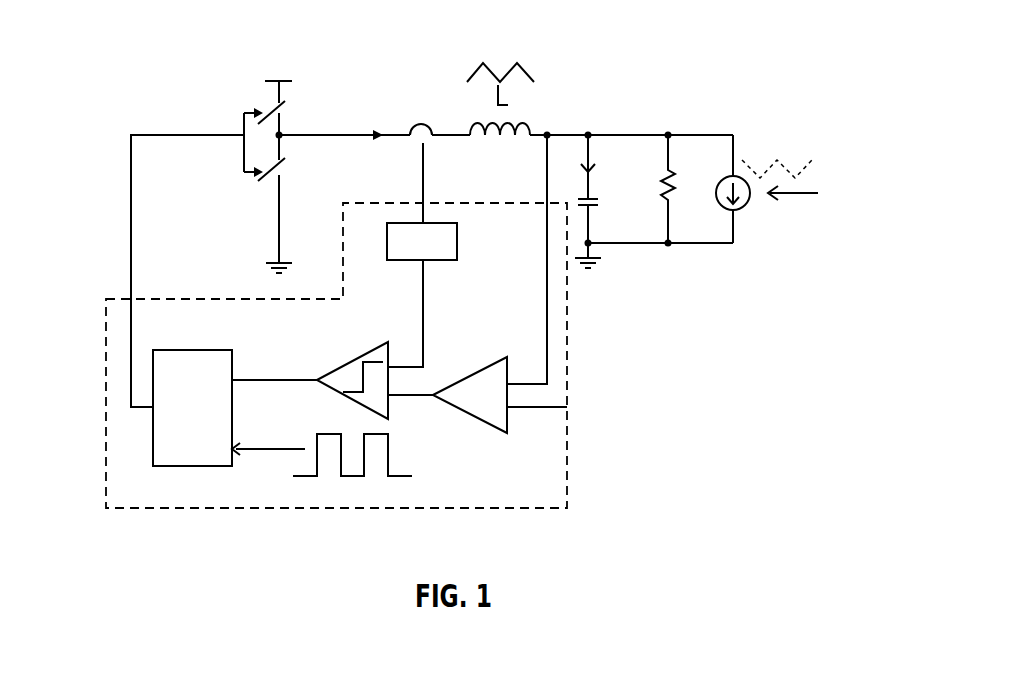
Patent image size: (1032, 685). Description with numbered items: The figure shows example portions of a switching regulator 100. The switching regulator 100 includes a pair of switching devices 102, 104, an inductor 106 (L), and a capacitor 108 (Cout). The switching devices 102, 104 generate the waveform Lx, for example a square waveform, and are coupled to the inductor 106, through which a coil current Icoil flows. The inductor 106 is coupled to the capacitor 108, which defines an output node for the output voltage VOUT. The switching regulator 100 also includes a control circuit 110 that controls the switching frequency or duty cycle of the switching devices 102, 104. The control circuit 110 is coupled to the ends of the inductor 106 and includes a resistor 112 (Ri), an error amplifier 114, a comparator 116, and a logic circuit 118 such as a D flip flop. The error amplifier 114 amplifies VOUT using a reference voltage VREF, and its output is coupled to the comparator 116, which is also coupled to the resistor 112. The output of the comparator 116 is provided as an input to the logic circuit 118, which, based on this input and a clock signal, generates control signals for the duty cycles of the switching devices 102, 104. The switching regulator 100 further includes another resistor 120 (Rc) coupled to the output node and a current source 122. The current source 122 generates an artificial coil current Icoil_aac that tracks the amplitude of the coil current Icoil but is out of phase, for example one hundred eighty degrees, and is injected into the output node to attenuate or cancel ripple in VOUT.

The switching regulator 100 is at (150, 30).
The switching device 102 is at (291, 102).
The switching device 104 is at (287, 170).
The inductor 106 is at (497, 113).
The capacitor 108 is at (592, 197).
The control circuit 110 is at (106, 388).
The resistor 112 is at (458, 241).
The error amplifier 114 is at (470, 371).
The comparator 116 is at (360, 355).
The logic circuit 118 is at (199, 350).
The resistor 120 is at (670, 165).
The current source 122 is at (742, 206).